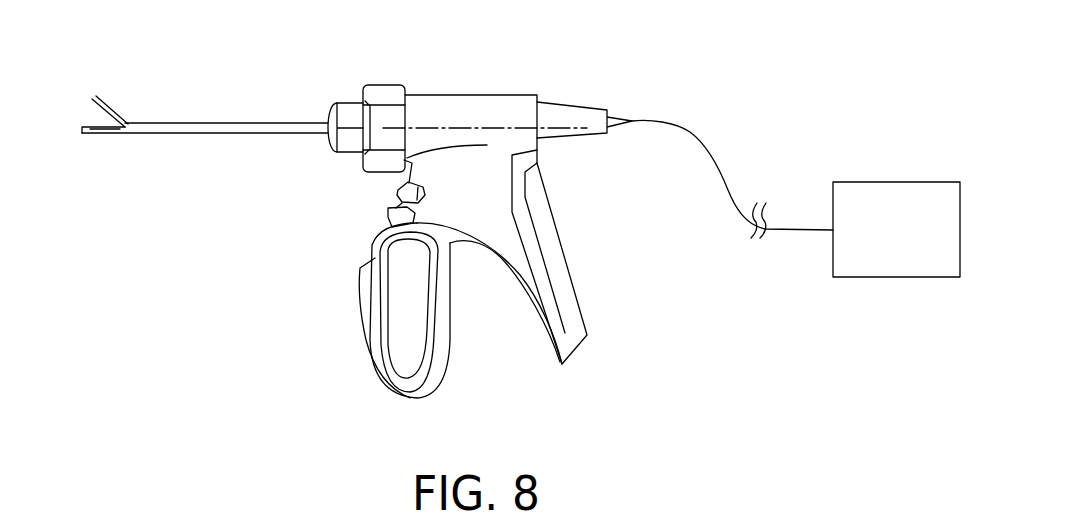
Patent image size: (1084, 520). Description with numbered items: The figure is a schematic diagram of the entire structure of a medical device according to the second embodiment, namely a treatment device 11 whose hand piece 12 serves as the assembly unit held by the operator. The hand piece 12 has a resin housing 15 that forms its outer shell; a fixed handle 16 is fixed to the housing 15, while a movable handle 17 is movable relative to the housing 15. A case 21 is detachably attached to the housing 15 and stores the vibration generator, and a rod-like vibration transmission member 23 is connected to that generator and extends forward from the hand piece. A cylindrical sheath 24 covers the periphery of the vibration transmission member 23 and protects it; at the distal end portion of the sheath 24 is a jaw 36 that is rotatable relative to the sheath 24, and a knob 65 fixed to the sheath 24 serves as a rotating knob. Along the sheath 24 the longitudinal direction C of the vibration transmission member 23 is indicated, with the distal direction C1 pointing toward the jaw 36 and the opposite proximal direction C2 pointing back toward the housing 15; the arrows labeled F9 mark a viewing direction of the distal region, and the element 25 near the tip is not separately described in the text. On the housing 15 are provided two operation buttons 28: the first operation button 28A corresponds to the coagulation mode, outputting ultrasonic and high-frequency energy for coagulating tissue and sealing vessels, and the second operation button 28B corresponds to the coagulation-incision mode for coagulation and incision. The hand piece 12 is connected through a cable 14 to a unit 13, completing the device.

The treatment device 11 is at (643, 57).
The hand piece 12 is at (517, 70).
The energy source / controller 13 is at (929, 182).
The cable 14 is at (700, 133).
The housing 15 is at (467, 102).
The fixed handle 16 is at (577, 344).
The movable handle 17 is at (434, 399).
The case 21 is at (573, 110).
The vibration transmission member 23 is at (107, 135).
The sheath 24 is at (279, 122).
The treatment portion 25 is at (96, 122).
The operation buttons 28 is at (308, 182).
The first operation button 28A is at (398, 191).
The second operation button 28B is at (392, 221).
The jaw 36 is at (114, 108).
The knob 65 is at (387, 93).
The longitudinal direction C is at (568, 142).
The view direction F9 is at (230, 82).
The distal direction C1 is at (165, 403).
The proximal direction C2 is at (264, 403).